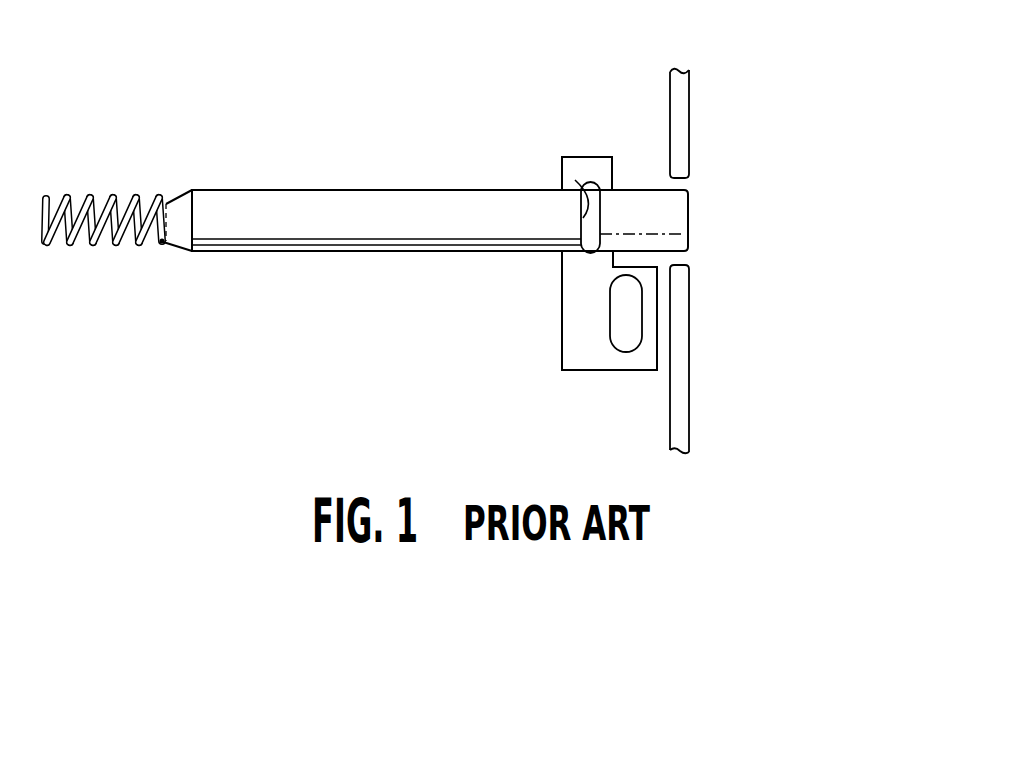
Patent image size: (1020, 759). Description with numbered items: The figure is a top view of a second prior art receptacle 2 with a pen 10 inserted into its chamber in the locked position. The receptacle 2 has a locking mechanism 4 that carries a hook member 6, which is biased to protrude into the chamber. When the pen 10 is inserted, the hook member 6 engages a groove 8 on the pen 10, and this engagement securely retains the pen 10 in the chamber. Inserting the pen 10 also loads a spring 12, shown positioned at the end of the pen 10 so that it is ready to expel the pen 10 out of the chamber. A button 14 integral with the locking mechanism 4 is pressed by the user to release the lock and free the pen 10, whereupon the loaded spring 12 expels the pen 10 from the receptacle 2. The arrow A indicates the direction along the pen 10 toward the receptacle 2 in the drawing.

The receptacle 2 is at (337, 110).
The locking mechanism 4 is at (562, 370).
The hook member 6 is at (595, 257).
The groove 8 is at (575, 180).
The pen 10 is at (356, 252).
The spring 12 is at (120, 247).
The button 14 is at (628, 338).
The direction arrow A is at (730, 219).